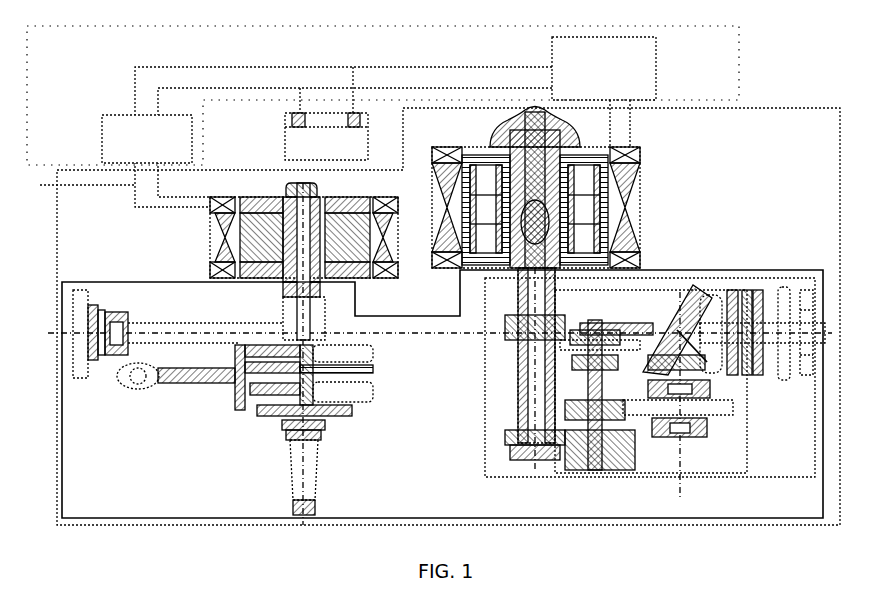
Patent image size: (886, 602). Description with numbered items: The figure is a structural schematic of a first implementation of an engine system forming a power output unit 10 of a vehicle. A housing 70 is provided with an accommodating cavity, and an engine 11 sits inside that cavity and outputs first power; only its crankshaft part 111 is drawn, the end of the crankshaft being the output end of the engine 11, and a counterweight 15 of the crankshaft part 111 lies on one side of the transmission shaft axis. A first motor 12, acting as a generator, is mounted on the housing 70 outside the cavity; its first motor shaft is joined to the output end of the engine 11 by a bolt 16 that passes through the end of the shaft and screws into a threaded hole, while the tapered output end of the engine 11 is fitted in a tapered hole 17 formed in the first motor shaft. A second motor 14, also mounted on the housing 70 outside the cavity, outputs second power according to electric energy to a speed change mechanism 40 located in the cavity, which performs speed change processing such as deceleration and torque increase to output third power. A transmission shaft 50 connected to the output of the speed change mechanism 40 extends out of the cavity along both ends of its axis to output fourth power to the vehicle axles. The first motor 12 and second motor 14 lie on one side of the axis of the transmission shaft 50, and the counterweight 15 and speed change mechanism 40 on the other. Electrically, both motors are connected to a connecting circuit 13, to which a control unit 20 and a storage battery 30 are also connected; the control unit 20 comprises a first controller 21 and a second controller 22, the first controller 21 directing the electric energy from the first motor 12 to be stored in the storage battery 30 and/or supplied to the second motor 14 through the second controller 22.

The power output unit 10 is at (110, 524).
The engine 11 is at (230, 412).
The crankshaft part 111 is at (280, 437).
The first motor 12 is at (206, 243).
The connecting circuit 13 is at (74, 188).
The second motor 14 is at (432, 255).
The counterweight 15 is at (200, 345).
The bolt 16 is at (300, 190).
The tapered hole 17 is at (332, 207).
The control unit 20 is at (740, 64).
The first controller 21 is at (102, 143).
The second controller 22 is at (656, 77).
The storage battery 30 is at (285, 135).
The speed change mechanism 40 is at (485, 432).
The transmission shaft 50 is at (645, 325).
The housing 70 is at (763, 271).